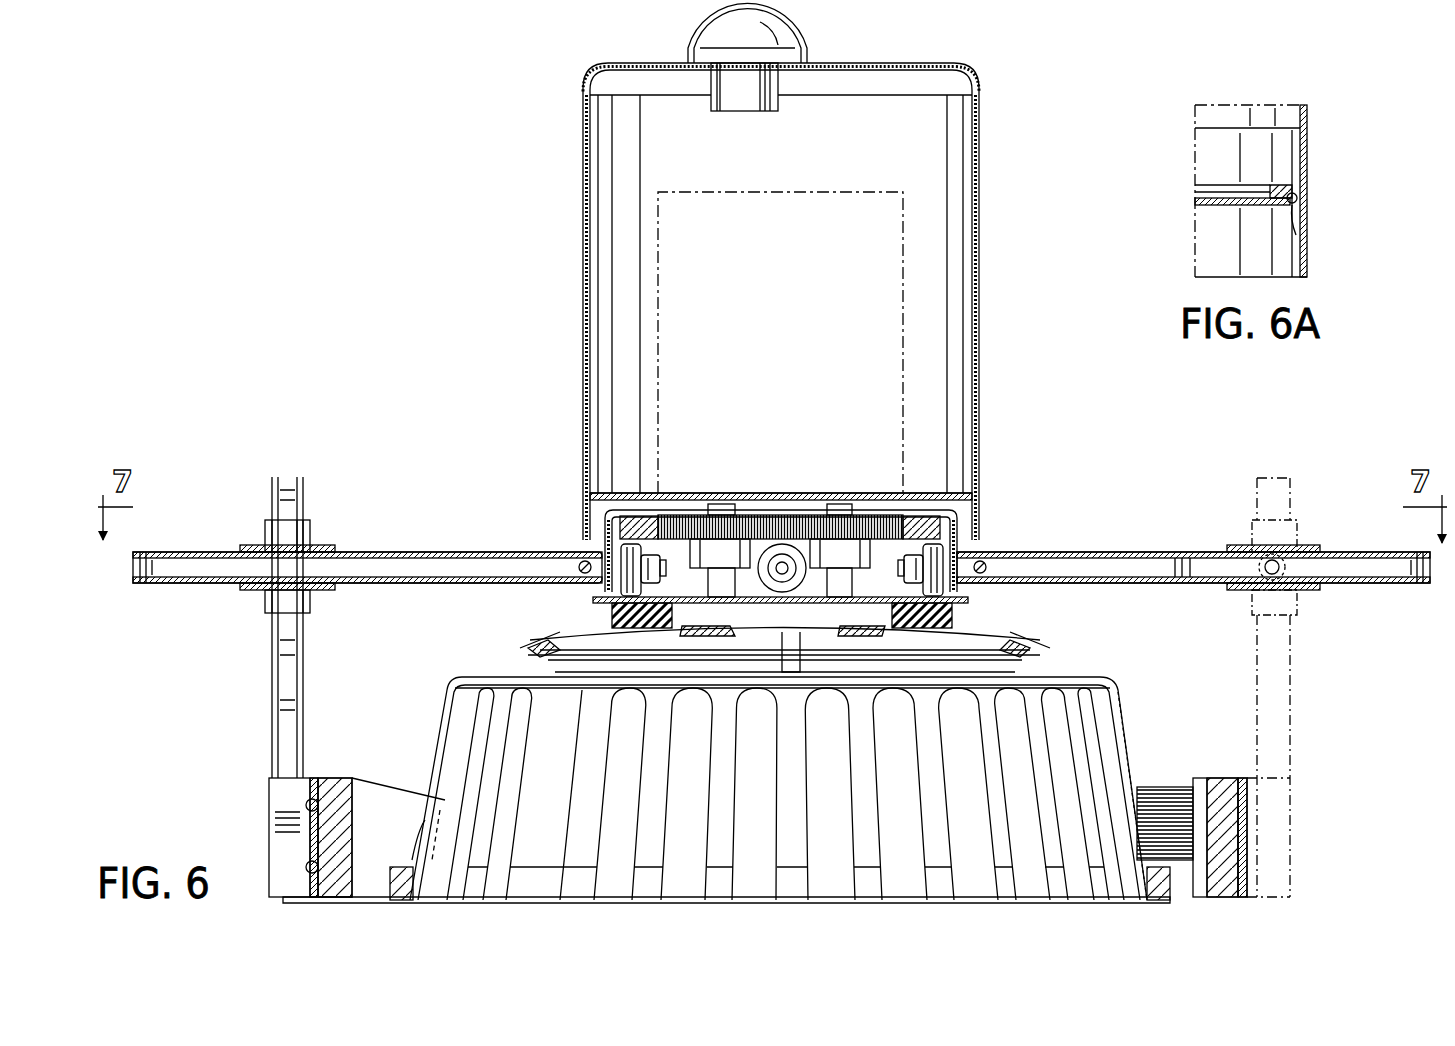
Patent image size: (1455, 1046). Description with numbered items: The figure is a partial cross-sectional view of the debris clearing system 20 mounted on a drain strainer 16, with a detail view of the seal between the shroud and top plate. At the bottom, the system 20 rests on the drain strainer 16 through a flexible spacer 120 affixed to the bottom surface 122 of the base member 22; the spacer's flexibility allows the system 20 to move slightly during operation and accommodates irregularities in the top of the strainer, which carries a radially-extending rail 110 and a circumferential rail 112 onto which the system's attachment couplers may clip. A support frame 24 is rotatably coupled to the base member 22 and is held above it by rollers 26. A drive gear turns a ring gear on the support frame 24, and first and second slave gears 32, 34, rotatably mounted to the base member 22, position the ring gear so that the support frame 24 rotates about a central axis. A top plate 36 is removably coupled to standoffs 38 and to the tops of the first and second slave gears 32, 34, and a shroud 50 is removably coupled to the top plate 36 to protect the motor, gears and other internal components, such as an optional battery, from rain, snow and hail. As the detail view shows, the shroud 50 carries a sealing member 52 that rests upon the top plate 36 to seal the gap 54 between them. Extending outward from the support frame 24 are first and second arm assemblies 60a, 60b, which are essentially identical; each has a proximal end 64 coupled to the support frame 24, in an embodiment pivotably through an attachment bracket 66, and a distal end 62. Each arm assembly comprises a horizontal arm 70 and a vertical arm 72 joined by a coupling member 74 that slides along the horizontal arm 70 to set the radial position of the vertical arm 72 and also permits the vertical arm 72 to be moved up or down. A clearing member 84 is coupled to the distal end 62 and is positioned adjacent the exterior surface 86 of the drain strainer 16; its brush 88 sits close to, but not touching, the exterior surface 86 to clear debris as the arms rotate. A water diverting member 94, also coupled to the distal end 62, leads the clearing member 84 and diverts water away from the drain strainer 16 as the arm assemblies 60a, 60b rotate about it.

In FIG. 6, the drain strainer 16 is at (456, 670).
In FIG. 6, the system 20 is at (1050, 95).
In FIG. 6, the base member 22 is at (830, 604).
In FIG. 6, the support frame 24 is at (600, 505).
In FIG. 6, the rollers 26 is at (786, 558).
In FIG. 6, the first slave gear 32 is at (745, 515).
In FIG. 6, the second slave gear 34 is at (872, 518).
In FIG. 6, the top plate 36 is at (672, 512).
In FIG. 6A, the top plate 36 is at (1215, 206).
In FIG. 6, the standoffs 38 is at (718, 514).
In FIG. 6, the shroud 50 is at (980, 230).
In FIG. 6A, the shroud 50 is at (1307, 122).
In FIG. 6, the sealing member 52 is at (965, 508).
In FIG. 6A, the sealing member 52 is at (1298, 196).
In FIG. 6A, the gap 54 is at (1300, 228).
In FIG. 6, the first arm assembly 60a is at (243, 492).
In FIG. 6, the second arm assembly 60b is at (1312, 485).
In FIG. 6, the distal end 62 is at (697, 190).
In FIG. 6, the proximal end 64 is at (150, 598).
In FIG. 6, the attachment bracket 66 is at (1022, 590).
In FIG. 6, the horizontal arm 70 is at (409, 550).
In FIG. 6, the vertical arm 72 is at (703, 45).
In FIG. 6, the coupling member 74 is at (252, 548).
In FIG. 6, the clearing member 84 is at (268, 810).
In FIG. 6, the exterior surface 86 is at (1125, 712).
In FIG. 6, the brush 88 is at (1163, 787).
In FIG. 6, the water diverting member 94 is at (375, 792).
In FIG. 6, the radially-extending rail 110 is at (782, 655).
In FIG. 6, the circumferential rail 112 is at (540, 645).
In FIG. 6, the flexible spacer 120 is at (611, 615).
In FIG. 6, the bottom surface 122 is at (965, 600).